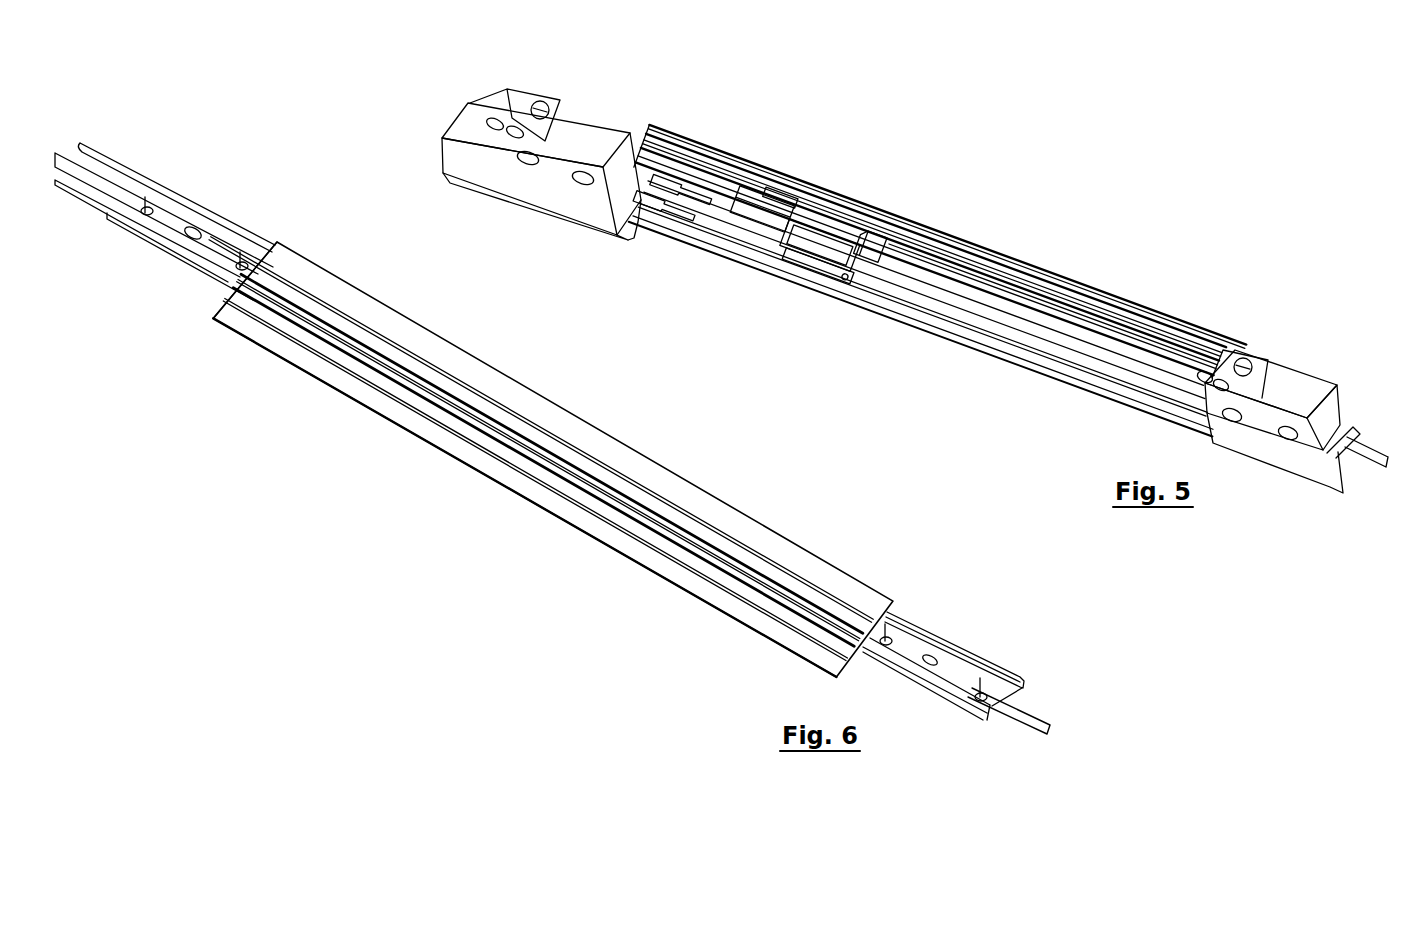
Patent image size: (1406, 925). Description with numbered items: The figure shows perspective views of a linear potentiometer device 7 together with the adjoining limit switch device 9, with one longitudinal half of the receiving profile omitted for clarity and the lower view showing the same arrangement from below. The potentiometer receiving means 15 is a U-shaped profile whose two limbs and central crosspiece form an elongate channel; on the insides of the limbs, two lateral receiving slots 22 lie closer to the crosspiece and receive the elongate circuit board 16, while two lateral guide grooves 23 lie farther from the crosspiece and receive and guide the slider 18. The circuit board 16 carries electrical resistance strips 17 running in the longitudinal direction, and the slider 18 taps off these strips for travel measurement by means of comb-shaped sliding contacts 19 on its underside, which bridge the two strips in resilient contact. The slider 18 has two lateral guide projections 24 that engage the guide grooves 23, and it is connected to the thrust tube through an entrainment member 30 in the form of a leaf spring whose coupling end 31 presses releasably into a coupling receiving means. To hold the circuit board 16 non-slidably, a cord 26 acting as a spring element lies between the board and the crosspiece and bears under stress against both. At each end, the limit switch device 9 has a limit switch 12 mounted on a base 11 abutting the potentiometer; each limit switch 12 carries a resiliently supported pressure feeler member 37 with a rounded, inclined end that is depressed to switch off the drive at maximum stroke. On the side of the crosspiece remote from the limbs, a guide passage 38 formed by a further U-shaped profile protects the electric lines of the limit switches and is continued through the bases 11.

In FIG. 5, the linear potentiometer device 7 is at (1042, 236).
In FIG. 6, the linear potentiometer device 7 is at (205, 346).
In FIG. 5, the limit switch device 9 is at (870, 303).
In FIG. 6, the limit switch device 9 is at (559, 404).
In FIG. 5, the base 11 is at (497, 172).
In FIG. 6, the base 11 is at (132, 170).
In FIG. 5, the limit switch 12 is at (598, 112).
In FIG. 6, the limit switch 12 is at (172, 255).
In FIG. 6, the potentiometer receiving means 15 is at (276, 362).
In FIG. 5, the circuit board 16 is at (890, 326).
In FIG. 6, the circuit board 16 is at (496, 368).
In FIG. 5, the resistance strips 17 is at (724, 228).
In FIG. 5, the slider 18 is at (788, 255).
In FIG. 5, the sliding contacts 19 is at (838, 242).
In FIG. 5, the receiving slots 22 is at (947, 282).
In FIG. 5, the guide grooves 23 is at (908, 250).
In FIG. 5, the guide projections 24 is at (879, 240).
In FIG. 5, the cord 26 is at (1372, 466).
In FIG. 6, the cord 26 is at (177, 215).
In FIG. 5, the entrainment member 30 is at (787, 197).
In FIG. 5, the coupling end 31 is at (801, 218).
In FIG. 5, the pressure feeler member 37 is at (545, 108).
In FIG. 6, the guide passage 38 is at (328, 324).